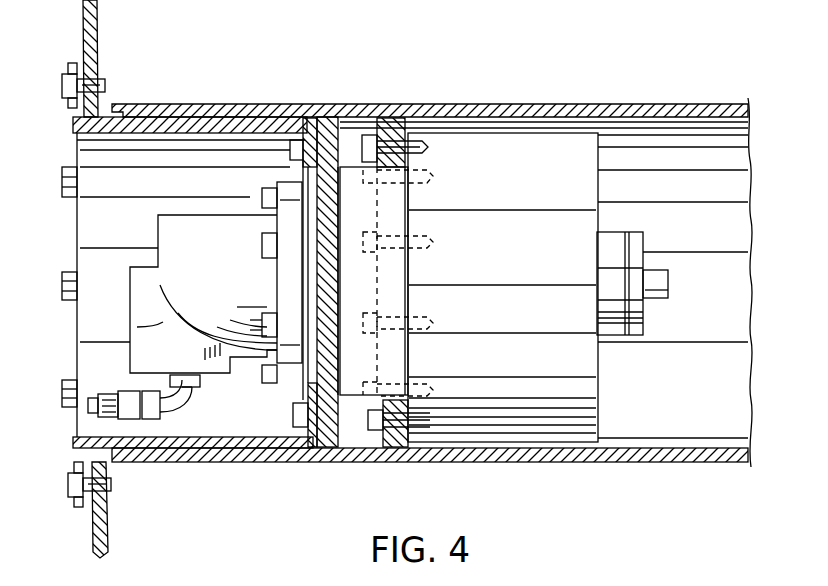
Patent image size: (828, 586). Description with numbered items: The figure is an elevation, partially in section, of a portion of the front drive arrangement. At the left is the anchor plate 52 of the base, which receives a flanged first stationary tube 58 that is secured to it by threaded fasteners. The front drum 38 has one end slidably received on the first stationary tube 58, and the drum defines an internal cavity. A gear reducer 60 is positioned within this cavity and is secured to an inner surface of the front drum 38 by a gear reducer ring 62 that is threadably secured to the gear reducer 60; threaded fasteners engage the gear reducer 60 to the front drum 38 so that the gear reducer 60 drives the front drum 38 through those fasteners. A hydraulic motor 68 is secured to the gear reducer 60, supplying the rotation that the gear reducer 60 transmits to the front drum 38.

The front drum 38 is at (592, 106).
The anchor plate 52 is at (100, 33).
The first stationary tube 58 is at (125, 107).
The gear reducer 60 is at (473, 152).
The gear reducer ring 62 is at (378, 108).
The hydraulic motor 68 is at (133, 355).